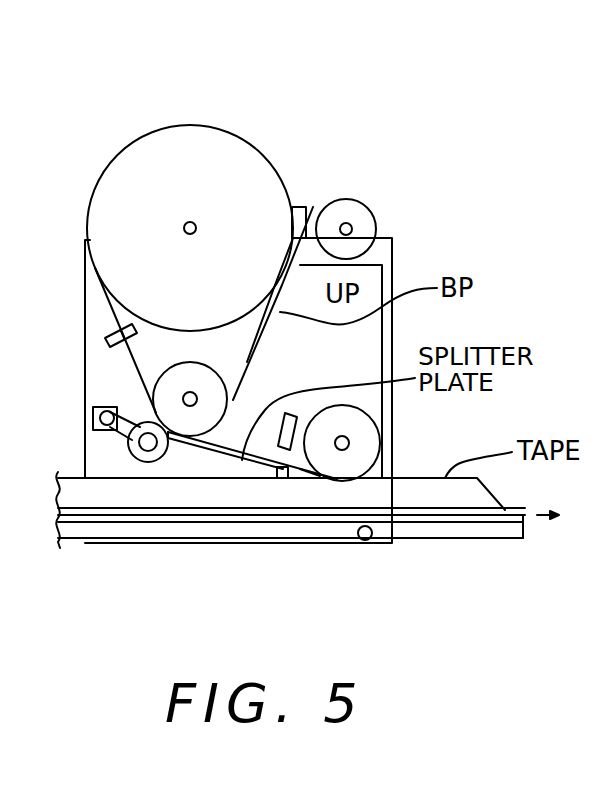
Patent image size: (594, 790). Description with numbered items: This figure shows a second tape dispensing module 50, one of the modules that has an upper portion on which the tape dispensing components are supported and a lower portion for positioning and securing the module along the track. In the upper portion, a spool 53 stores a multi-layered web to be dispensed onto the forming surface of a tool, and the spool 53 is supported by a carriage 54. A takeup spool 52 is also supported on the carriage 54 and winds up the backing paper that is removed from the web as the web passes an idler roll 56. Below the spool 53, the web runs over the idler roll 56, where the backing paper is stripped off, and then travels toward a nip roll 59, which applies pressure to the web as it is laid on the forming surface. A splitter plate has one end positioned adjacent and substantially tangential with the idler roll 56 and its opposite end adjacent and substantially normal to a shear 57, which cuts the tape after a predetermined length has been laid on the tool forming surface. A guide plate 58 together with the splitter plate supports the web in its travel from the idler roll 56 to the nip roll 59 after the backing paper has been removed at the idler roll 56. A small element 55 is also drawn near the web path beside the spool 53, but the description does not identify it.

The module 50 is at (272, 558).
The takeup spool 52 is at (370, 205).
The spool 53 is at (230, 130).
The carriage 54 is at (305, 207).
The tape guide 55 is at (103, 333).
The idler roll 56 is at (225, 380).
The shear 57 is at (278, 450).
The guide plate 58 is at (316, 477).
The nip roll 59 is at (380, 432).